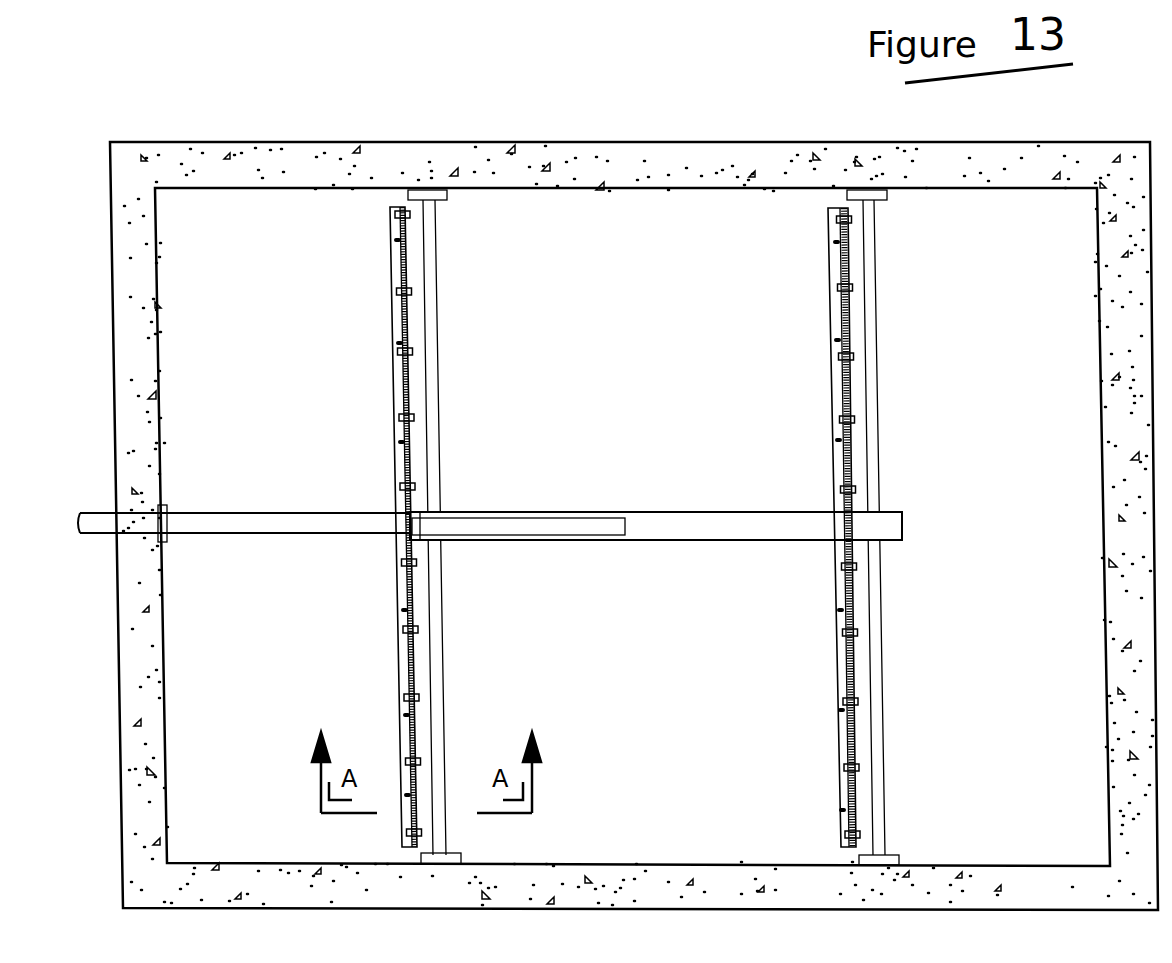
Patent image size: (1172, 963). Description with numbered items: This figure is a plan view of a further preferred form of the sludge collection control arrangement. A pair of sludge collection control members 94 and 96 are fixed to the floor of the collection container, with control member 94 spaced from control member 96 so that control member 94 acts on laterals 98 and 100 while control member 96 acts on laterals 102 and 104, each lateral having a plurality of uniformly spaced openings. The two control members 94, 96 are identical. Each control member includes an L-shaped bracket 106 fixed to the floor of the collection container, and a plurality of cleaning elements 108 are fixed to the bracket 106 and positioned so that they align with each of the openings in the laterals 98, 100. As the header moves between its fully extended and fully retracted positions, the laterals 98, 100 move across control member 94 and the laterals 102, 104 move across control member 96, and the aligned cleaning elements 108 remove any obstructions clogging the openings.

The sludge collection control member 94 is at (362, 447).
The sludge collection control member 96 is at (798, 664).
The lateral 98 is at (482, 407).
The lateral 100 is at (487, 672).
The lateral 102 is at (893, 440).
The lateral 104 is at (897, 722).
The L-shaped bracket 106 is at (400, 672).
The cleaning elements 108 is at (400, 215).